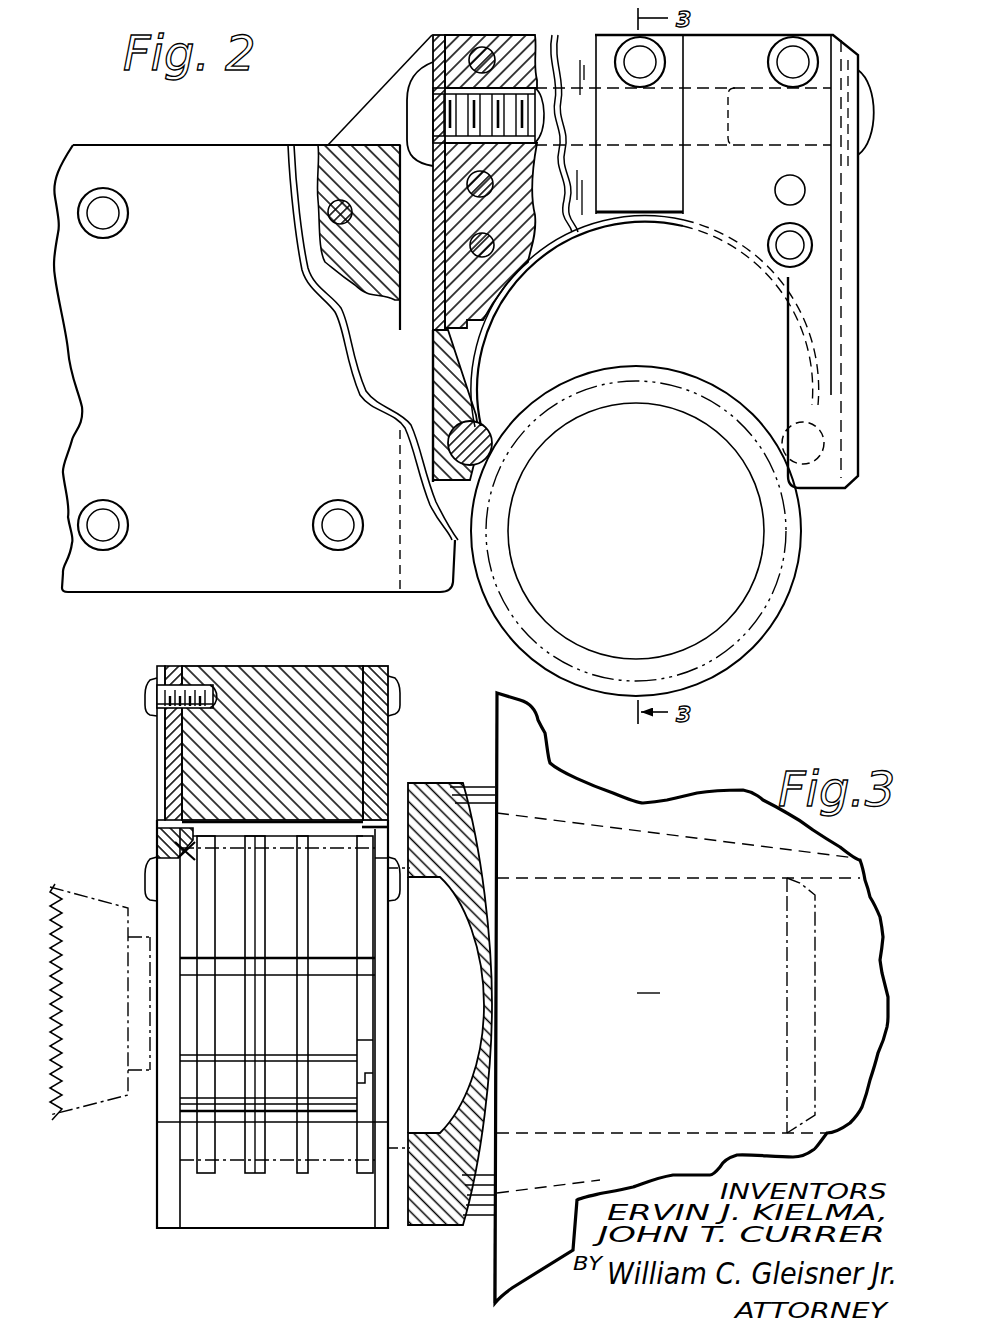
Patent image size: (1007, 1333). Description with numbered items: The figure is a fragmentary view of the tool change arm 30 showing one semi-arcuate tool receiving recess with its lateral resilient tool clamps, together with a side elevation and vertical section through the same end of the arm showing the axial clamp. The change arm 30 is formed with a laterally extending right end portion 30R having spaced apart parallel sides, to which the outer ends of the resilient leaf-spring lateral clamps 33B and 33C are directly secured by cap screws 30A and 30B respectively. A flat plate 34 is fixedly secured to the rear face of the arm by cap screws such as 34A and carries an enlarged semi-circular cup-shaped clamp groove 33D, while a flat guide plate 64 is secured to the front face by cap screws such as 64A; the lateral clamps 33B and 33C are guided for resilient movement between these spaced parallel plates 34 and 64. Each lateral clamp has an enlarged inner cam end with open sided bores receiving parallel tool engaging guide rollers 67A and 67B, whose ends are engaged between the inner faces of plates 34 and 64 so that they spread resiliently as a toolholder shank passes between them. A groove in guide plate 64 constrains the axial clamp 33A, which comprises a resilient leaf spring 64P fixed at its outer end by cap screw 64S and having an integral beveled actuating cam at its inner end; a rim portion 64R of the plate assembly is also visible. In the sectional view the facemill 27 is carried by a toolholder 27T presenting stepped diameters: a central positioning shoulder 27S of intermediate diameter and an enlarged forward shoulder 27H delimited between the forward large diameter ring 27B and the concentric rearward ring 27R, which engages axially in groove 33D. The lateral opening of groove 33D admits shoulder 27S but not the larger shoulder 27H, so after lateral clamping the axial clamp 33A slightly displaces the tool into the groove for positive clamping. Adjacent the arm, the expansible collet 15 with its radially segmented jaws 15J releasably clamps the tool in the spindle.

In FIG. 3, the expansible collet 15 is at (468, 797).
In FIG. 3, the radially segmented jaws 15J is at (580, 852).
In FIG. 3, the facemill 27 is at (83, 1090).
In FIG. 3, the forward large diameter ring 27B is at (160, 843).
In FIG. 2, the enlarged forward shoulder 27H is at (760, 658).
In FIG. 3, the enlarged forward shoulder 27H is at (207, 1178).
In FIG. 3, the rearward ring 27R is at (380, 958).
In FIG. 2, the central positioning shoulder 27S is at (758, 617).
In FIG. 3, the central positioning shoulder 27S is at (417, 1020).
In FIG. 2, the toolholder 27T is at (556, 624).
In FIG. 3, the toolholder 27T is at (692, 998).
In FIG. 3, the tool change arm 30 is at (297, 690).
In FIG. 2, the cap screw 30A is at (420, 97).
In FIG. 2, the cap screw 30B is at (870, 103).
In FIG. 2, the laterally extending right end portion 30R is at (462, 35).
In FIG. 3, the axial tool clamp 33A is at (153, 803).
In FIG. 2, the lateral tool clamp 33B is at (430, 383).
In FIG. 2, the lateral tool clamp 33C is at (871, 330).
In FIG. 2, the semi-circular clamp groove 33D is at (478, 355).
In FIG. 3, the semi-circular clamp groove 33D is at (370, 850).
In FIG. 2, the flat plate 34 is at (453, 503).
In FIG. 3, the flat plate 34 is at (378, 747).
In FIG. 3, the cap screw 34A is at (403, 693).
In FIG. 2, the flat guide plate 64 is at (743, 52).
In FIG. 3, the flat guide plate 64 is at (175, 765).
In FIG. 2, the cap screw 64A is at (796, 62).
In FIG. 2, the leaf spring 64P is at (623, 200).
In FIG. 3, the plate rim 64R is at (160, 735).
In FIG. 2, the cap screw 64S is at (640, 86).
In FIG. 3, the cap screw 64S is at (152, 694).
In FIG. 2, the tool engaging guide roller 67A is at (490, 447).
In FIG. 3, the tool engaging guide roller 67A is at (270, 1083).
In FIG. 2, the tool engaging guide roller 67B is at (785, 443).